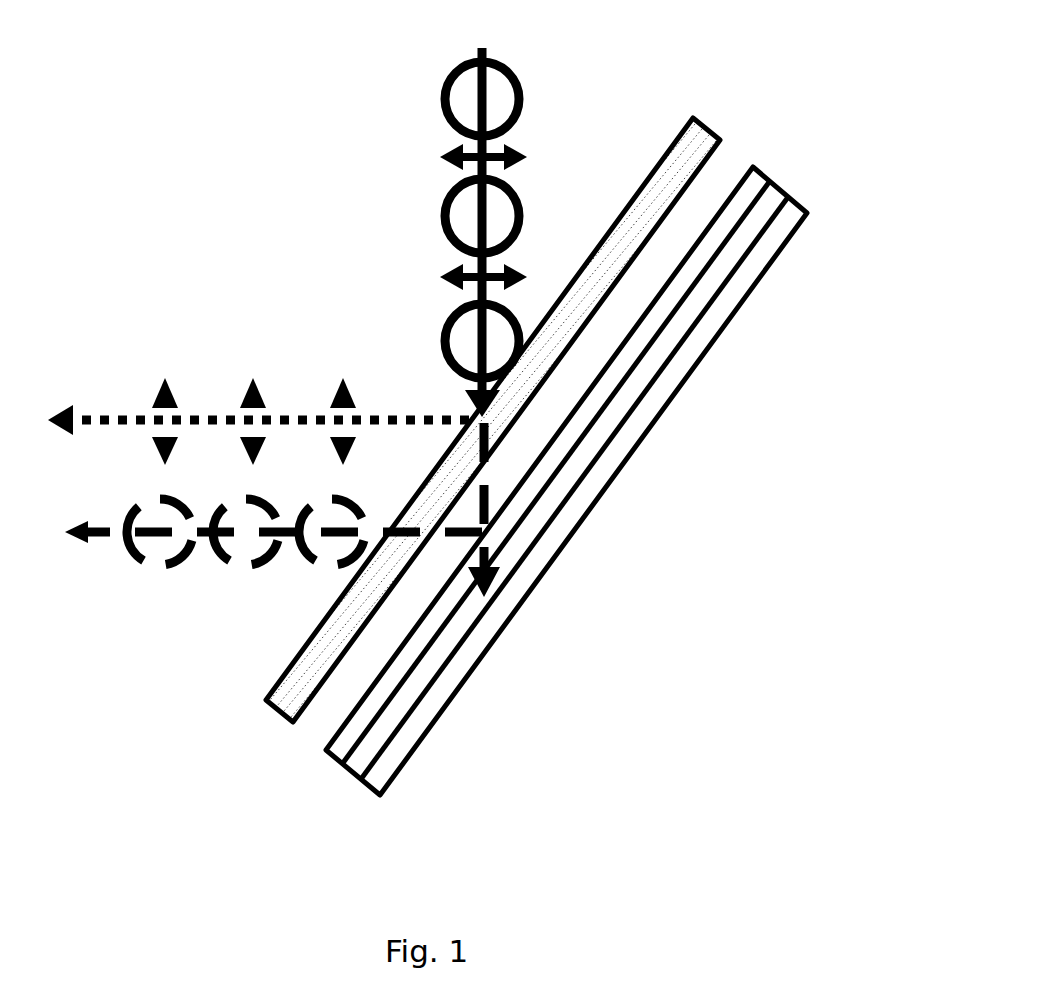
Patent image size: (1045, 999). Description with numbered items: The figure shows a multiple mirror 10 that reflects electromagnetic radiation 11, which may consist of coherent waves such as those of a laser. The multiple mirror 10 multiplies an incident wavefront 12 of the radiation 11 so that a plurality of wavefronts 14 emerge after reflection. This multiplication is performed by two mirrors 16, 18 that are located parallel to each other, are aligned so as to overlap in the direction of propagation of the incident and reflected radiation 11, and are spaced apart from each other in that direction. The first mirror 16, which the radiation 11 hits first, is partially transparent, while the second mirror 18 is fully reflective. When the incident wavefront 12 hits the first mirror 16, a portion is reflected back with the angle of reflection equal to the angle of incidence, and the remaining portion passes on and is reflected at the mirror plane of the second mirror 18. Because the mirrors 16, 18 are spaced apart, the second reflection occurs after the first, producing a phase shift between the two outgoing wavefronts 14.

The multiple mirror 10 is at (812, 137).
The electromagnetic radiation 11 is at (460, 267).
The incident wavefront 12 is at (477, 227).
The wavefronts 14 is at (128, 423).
The first mirror 16 is at (619, 217).
The second mirror 18 is at (660, 393).